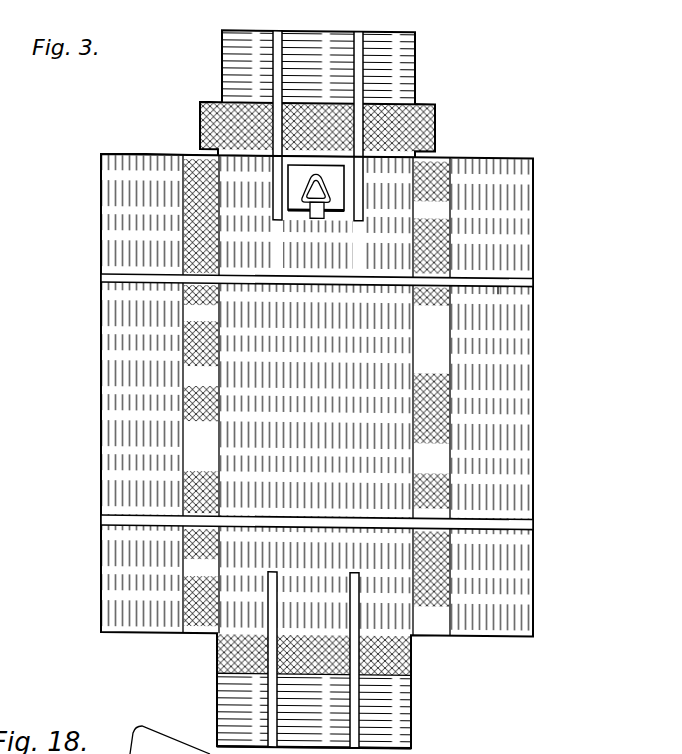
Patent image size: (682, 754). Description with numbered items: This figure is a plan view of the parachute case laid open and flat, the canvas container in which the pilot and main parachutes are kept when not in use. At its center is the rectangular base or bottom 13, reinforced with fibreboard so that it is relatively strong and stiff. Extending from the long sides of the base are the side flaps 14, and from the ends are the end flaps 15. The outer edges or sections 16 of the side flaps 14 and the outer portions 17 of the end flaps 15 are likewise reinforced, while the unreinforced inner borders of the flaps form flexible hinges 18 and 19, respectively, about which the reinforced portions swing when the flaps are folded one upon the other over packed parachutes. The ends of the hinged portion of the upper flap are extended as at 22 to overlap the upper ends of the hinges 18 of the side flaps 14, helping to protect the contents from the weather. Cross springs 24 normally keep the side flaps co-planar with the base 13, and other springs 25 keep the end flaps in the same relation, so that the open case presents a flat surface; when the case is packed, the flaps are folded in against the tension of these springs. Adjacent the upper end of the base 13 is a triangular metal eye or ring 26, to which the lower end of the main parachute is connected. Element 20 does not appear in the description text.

The base or bottom 13 is at (405, 262).
The side flaps 14 is at (517, 393).
The end flaps 15 is at (402, 692).
The outer edges or sections of side flaps 16 is at (510, 426).
The outer portions of end flaps 17 is at (400, 720).
The hinges of side flaps 18 is at (435, 554).
The hinges of end flaps 19 is at (400, 652).
The end extension 20 is at (372, 49).
The extended ends or ears 22 is at (432, 128).
The cross springs 24 is at (503, 278).
The springs 25 is at (272, 637).
The metal eye or ring 26 is at (330, 182).